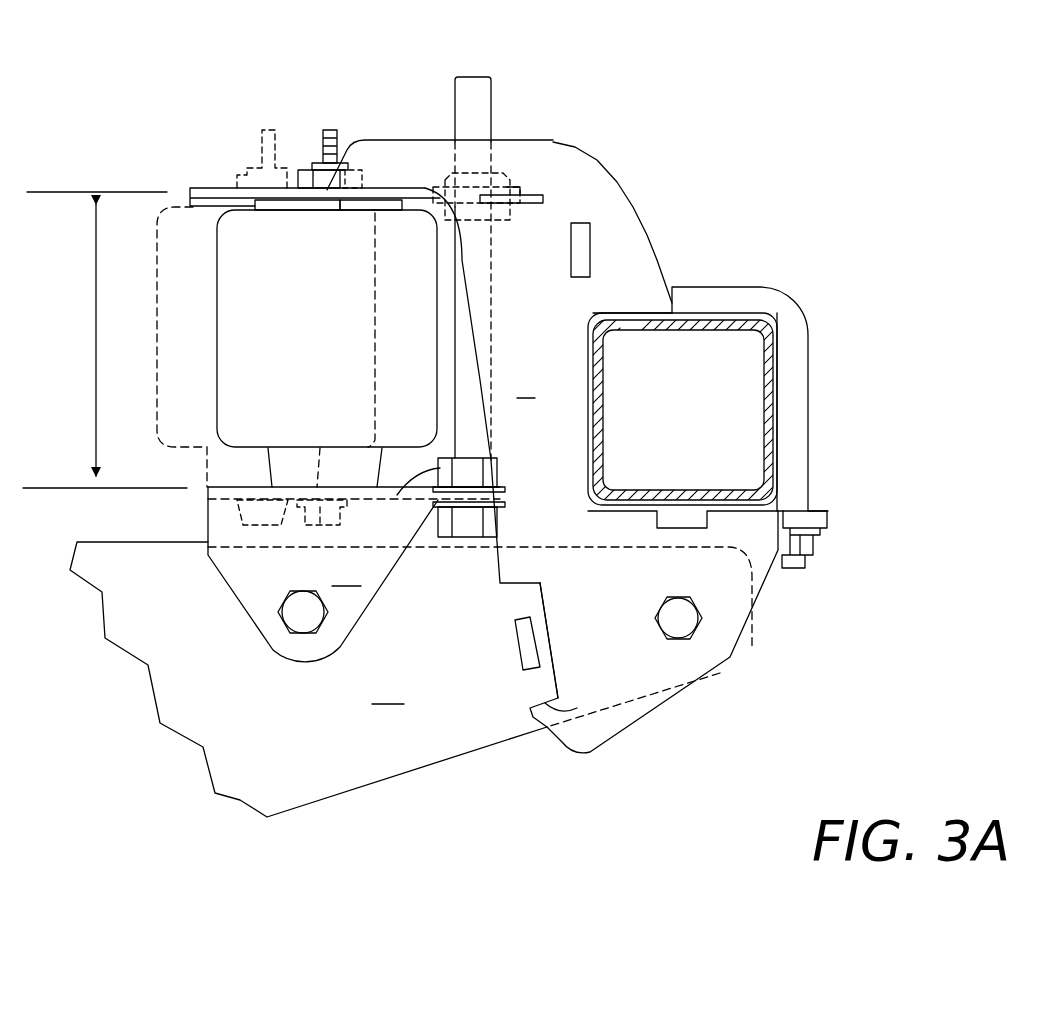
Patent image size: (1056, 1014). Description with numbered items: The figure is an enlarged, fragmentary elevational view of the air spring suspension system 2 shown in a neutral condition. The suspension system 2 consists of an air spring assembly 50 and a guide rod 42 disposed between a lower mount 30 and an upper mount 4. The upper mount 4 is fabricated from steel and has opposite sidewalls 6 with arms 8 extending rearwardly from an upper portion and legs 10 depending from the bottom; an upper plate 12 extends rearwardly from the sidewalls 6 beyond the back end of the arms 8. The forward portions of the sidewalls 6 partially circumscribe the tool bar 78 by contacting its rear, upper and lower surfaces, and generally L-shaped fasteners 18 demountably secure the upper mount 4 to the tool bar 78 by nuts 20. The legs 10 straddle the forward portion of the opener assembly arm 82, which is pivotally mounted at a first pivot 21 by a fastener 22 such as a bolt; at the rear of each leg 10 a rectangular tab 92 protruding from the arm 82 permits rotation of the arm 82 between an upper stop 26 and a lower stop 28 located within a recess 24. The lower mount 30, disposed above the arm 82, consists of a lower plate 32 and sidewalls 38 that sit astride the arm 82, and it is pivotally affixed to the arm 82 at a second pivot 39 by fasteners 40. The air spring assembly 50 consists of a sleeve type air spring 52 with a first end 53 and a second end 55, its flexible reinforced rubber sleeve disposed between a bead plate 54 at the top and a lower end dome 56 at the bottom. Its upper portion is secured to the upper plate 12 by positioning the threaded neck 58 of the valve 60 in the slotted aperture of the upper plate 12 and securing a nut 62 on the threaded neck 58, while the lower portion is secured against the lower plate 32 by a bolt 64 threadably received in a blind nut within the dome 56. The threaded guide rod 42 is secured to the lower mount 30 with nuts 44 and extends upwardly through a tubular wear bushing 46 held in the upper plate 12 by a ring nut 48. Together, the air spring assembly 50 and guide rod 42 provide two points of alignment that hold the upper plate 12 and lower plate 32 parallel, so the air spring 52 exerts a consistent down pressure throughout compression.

The suspension system 2 is at (405, 96).
The upper mount 4 is at (696, 202).
The sidewalls 6 is at (526, 385).
The arms 8 is at (377, 140).
The legs 10 is at (637, 722).
The upper plate 12 is at (212, 188).
The L-shaped fasteners 18 is at (797, 302).
The nuts 20 is at (815, 547).
The first pivot 21 is at (678, 640).
The fastener 22 is at (678, 597).
The recess 24 is at (550, 663).
The upper stop 26 is at (520, 583).
The lower stop 28 is at (577, 708).
The lower mount 30 is at (232, 643).
The lower plate 32 is at (208, 487).
The sidewalls 38 is at (346, 573).
The second pivot 39 is at (305, 637).
The fasteners 40 is at (323, 625).
The guide rod 42 is at (493, 112).
The nuts 44 is at (433, 518).
The wear bushing 46 is at (510, 173).
The ring nut 48 is at (520, 187).
The air spring assembly 50 is at (125, 152).
The air spring 52 is at (216, 287).
The first end 53 is at (297, 202).
The bead plate 54 is at (247, 202).
The second end 55 is at (362, 485).
The lower end dome 56 is at (268, 468).
The threaded neck 58 is at (315, 168).
The valve 60 is at (330, 130).
The nut 62 is at (350, 174).
The bolt 64 is at (307, 523).
The tool bar 78 is at (713, 335).
The opener assembly arm 82 is at (323, 595).
The tab 92 is at (517, 642).